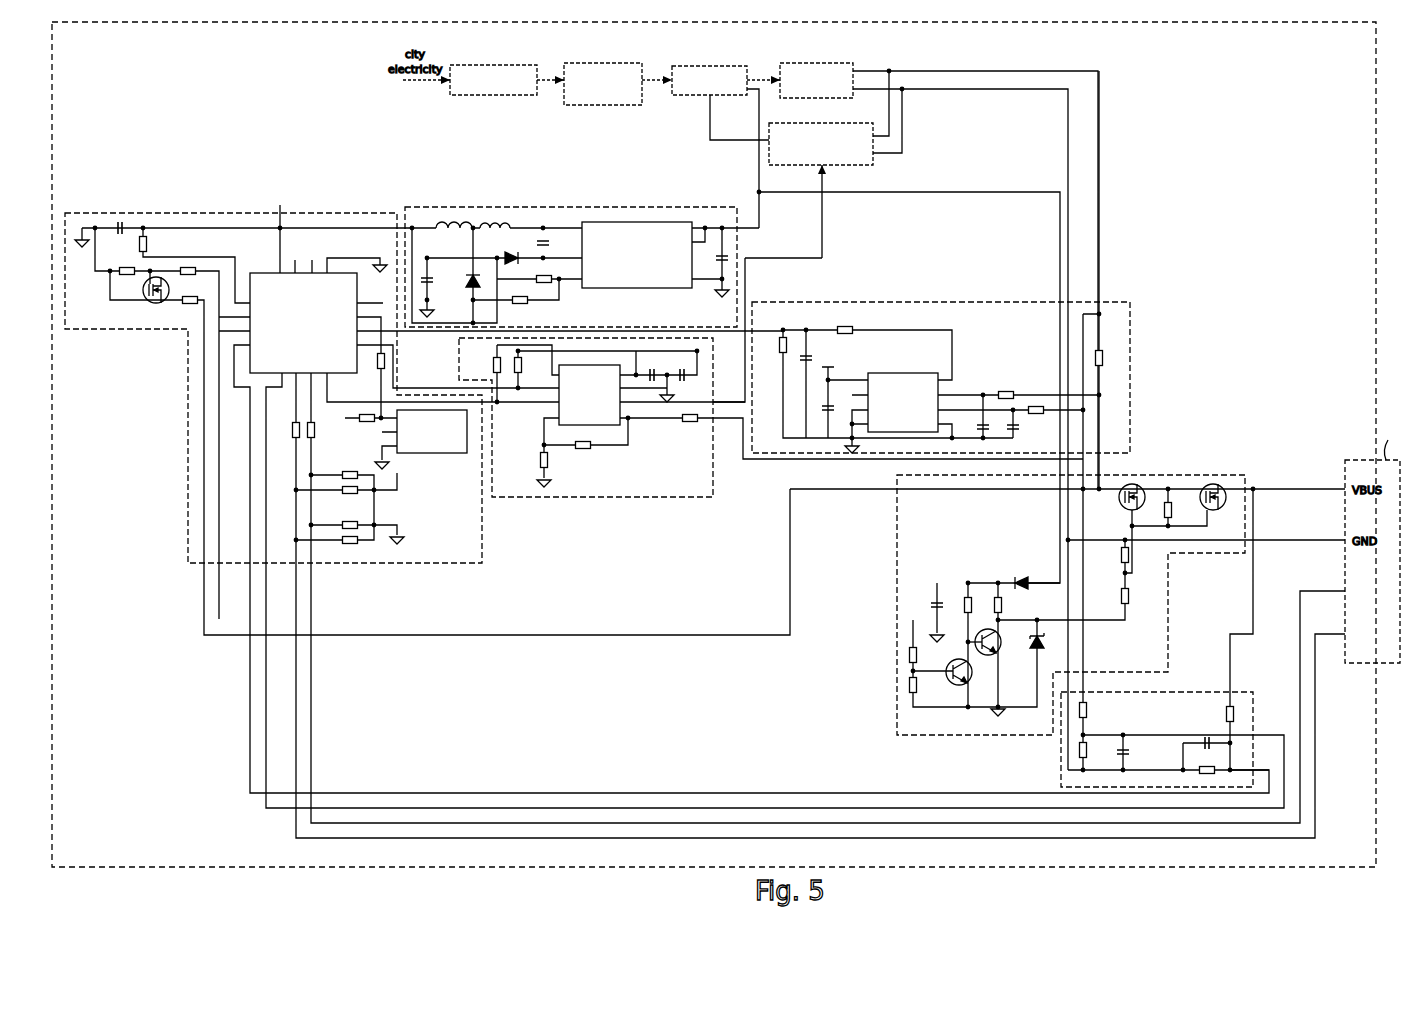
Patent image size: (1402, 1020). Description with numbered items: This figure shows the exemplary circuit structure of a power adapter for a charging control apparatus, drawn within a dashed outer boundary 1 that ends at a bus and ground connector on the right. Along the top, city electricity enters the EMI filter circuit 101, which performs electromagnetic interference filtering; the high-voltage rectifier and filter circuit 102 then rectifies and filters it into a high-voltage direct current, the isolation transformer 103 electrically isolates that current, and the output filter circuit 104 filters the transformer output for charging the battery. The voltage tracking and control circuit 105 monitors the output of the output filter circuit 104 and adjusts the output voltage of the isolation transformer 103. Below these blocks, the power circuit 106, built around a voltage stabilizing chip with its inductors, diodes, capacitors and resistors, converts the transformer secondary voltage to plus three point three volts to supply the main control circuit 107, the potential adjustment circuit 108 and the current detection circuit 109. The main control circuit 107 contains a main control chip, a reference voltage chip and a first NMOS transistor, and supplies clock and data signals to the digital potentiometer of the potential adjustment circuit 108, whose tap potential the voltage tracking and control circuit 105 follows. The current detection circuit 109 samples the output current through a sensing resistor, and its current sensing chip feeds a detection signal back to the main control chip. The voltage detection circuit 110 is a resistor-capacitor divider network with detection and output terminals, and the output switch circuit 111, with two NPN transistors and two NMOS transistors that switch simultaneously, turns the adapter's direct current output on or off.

The power supply device 1 is at (1377, 163).
The EMI filter circuit 101 is at (497, 65).
The high-voltage rectifier and filter circuit 102 is at (608, 63).
The isolation transformer 103 is at (713, 66).
The output filter circuit 104 is at (815, 63).
The voltage tracking and control circuit 105 is at (808, 123).
The power circuit 106 is at (612, 207).
The main control circuit 107 is at (327, 213).
The potential adjustment circuit 108 is at (598, 499).
The current detection circuit 109 is at (915, 300).
The voltage detection circuit 110 is at (1172, 692).
The output switch circuit 111 is at (1185, 474).